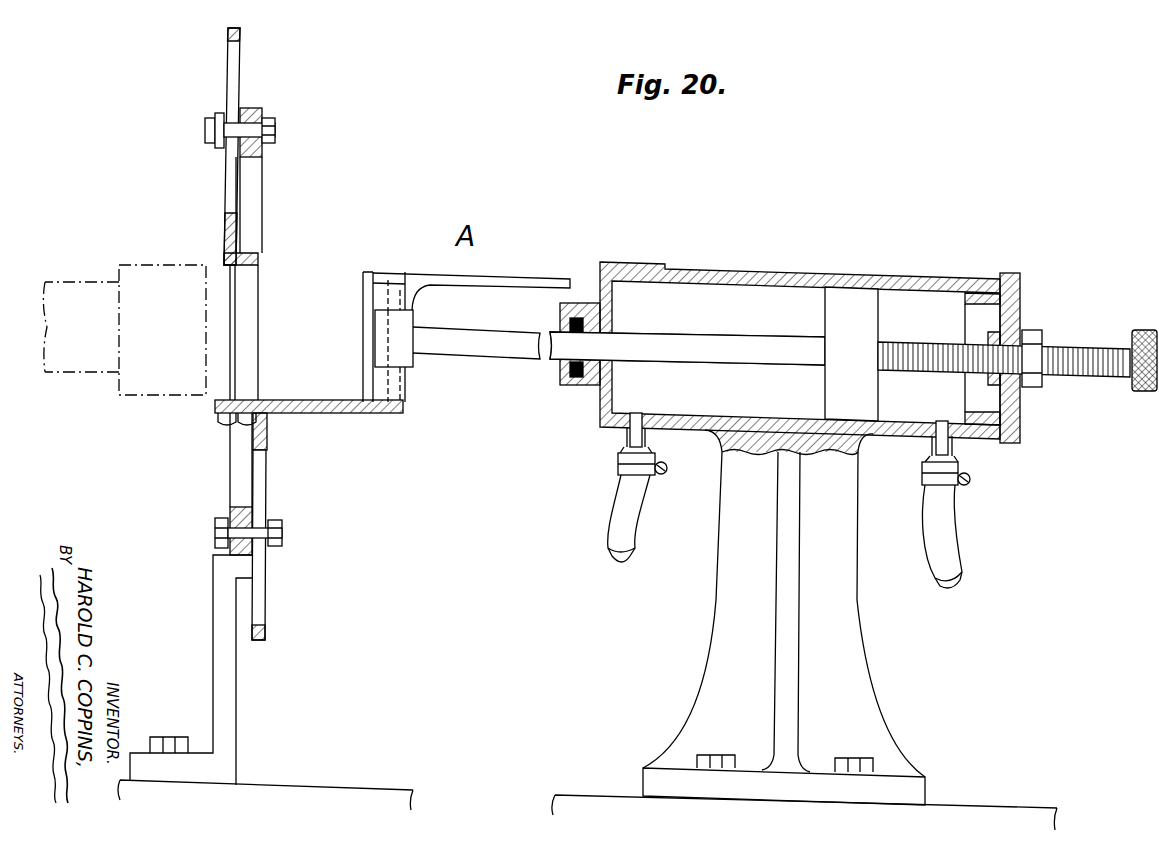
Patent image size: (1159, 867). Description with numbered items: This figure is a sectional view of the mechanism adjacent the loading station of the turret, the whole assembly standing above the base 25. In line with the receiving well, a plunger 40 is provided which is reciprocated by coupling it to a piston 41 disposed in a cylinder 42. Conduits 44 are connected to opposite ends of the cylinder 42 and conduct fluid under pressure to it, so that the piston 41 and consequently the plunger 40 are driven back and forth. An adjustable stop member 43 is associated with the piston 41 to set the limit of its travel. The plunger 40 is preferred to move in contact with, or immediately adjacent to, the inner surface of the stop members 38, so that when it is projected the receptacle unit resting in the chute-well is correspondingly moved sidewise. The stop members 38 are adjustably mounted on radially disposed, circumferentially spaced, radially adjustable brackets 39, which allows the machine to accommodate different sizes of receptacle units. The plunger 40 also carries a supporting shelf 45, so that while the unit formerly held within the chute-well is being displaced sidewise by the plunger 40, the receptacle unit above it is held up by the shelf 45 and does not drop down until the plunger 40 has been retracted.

The base 25 is at (382, 791).
The stop member 38 is at (384, 414).
The bracket 39 is at (233, 88).
The plunger 40 is at (369, 296).
The piston 41 is at (850, 293).
The cylinder 42 is at (692, 277).
The adjustable stop member 43 is at (1054, 350).
The conduit 44 is at (643, 523).
The supporting shelf 45 is at (473, 282).